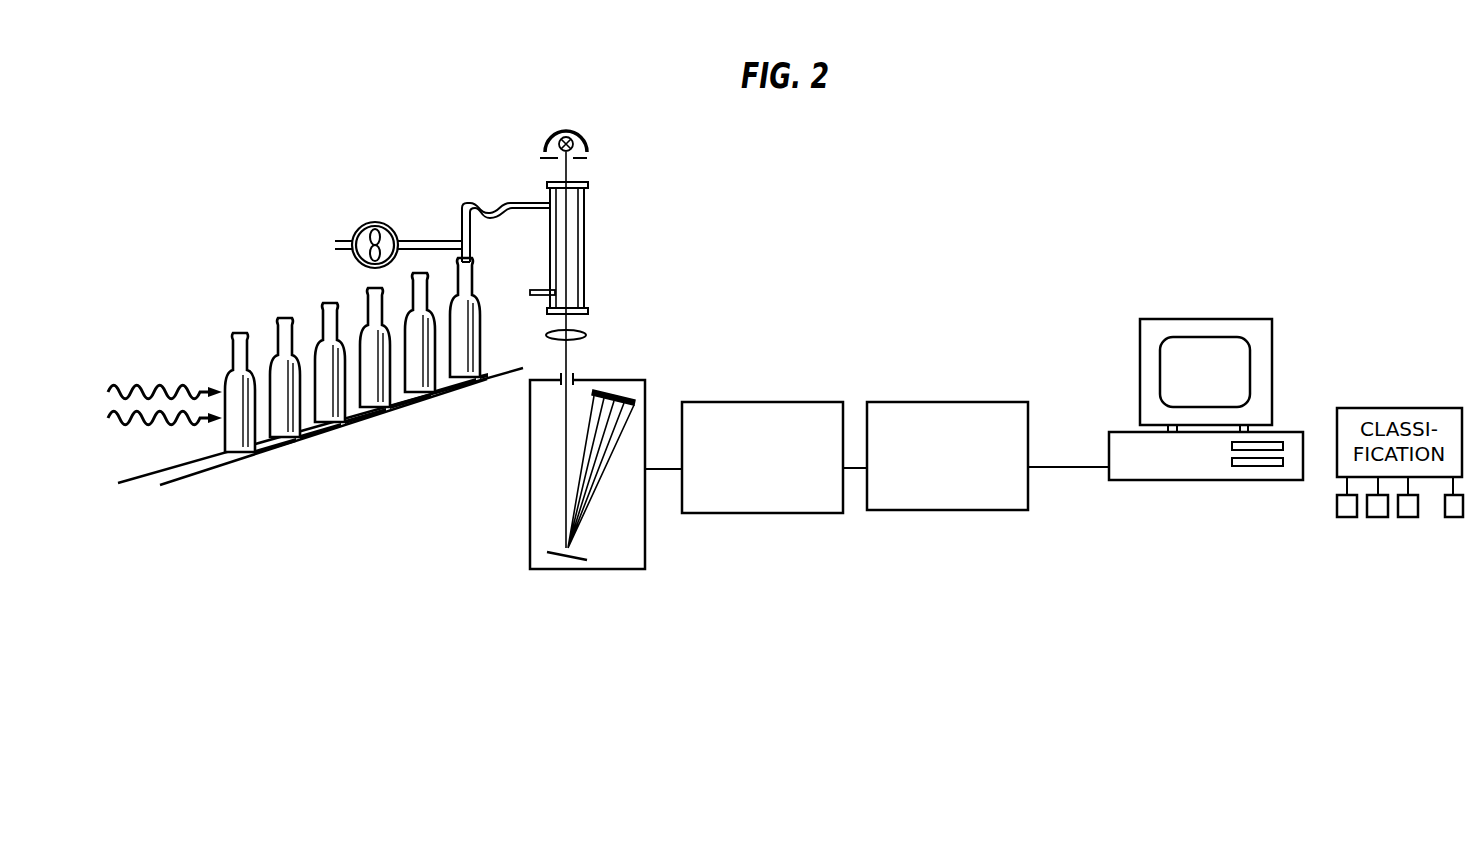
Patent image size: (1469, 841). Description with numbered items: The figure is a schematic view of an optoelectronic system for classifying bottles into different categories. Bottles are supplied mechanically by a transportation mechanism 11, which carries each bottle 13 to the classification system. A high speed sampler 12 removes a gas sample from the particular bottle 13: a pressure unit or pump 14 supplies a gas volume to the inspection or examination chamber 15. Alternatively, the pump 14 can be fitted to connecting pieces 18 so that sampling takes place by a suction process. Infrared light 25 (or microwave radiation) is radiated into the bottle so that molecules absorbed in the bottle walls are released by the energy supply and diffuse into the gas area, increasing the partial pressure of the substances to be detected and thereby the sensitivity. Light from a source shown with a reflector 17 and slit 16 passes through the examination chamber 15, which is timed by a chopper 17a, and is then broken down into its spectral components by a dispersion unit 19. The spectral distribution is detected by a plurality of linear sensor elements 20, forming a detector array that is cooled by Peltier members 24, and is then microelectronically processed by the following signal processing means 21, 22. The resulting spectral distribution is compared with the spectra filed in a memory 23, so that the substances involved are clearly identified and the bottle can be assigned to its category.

The transportation mechanism 11 is at (222, 461).
The high speed sampler 12 is at (458, 242).
The bottle 13 is at (463, 384).
The pump 14 is at (380, 222).
The examination chamber 15 is at (589, 272).
The aperture slit 16 is at (573, 167).
The reflector 17 is at (587, 124).
The chopper 17a is at (540, 158).
The connecting pieces 18 is at (538, 290).
The dispersion unit 19 is at (556, 556).
The linear sensor elements 20 is at (592, 415).
The signal processing means 21 is at (760, 402).
The signal processing means 22 is at (940, 402).
The memory 23 is at (1282, 432).
The Peltier members 24 is at (618, 393).
The infrared light 25 is at (168, 387).